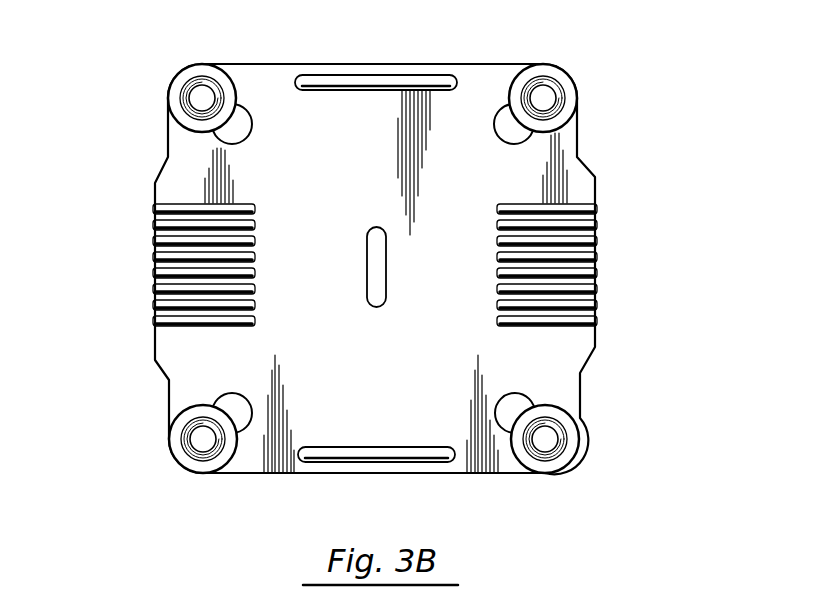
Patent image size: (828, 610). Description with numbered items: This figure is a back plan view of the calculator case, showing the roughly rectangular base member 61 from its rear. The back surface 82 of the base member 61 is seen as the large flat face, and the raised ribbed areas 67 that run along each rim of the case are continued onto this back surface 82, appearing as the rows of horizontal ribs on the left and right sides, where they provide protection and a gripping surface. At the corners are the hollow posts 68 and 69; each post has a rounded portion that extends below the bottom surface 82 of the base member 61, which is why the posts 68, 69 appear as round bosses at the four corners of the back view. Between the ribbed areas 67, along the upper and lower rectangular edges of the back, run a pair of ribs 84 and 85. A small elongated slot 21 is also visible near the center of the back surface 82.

The central slot 21 is at (381, 269).
The base member 61 is at (572, 351).
The raised ribbed area 67 is at (595, 257).
The hollow post 68 is at (565, 80).
The hollow post 69 is at (578, 418).
The bottom surface 82 is at (394, 399).
The rib 84 is at (400, 82).
The rib 85 is at (354, 453).